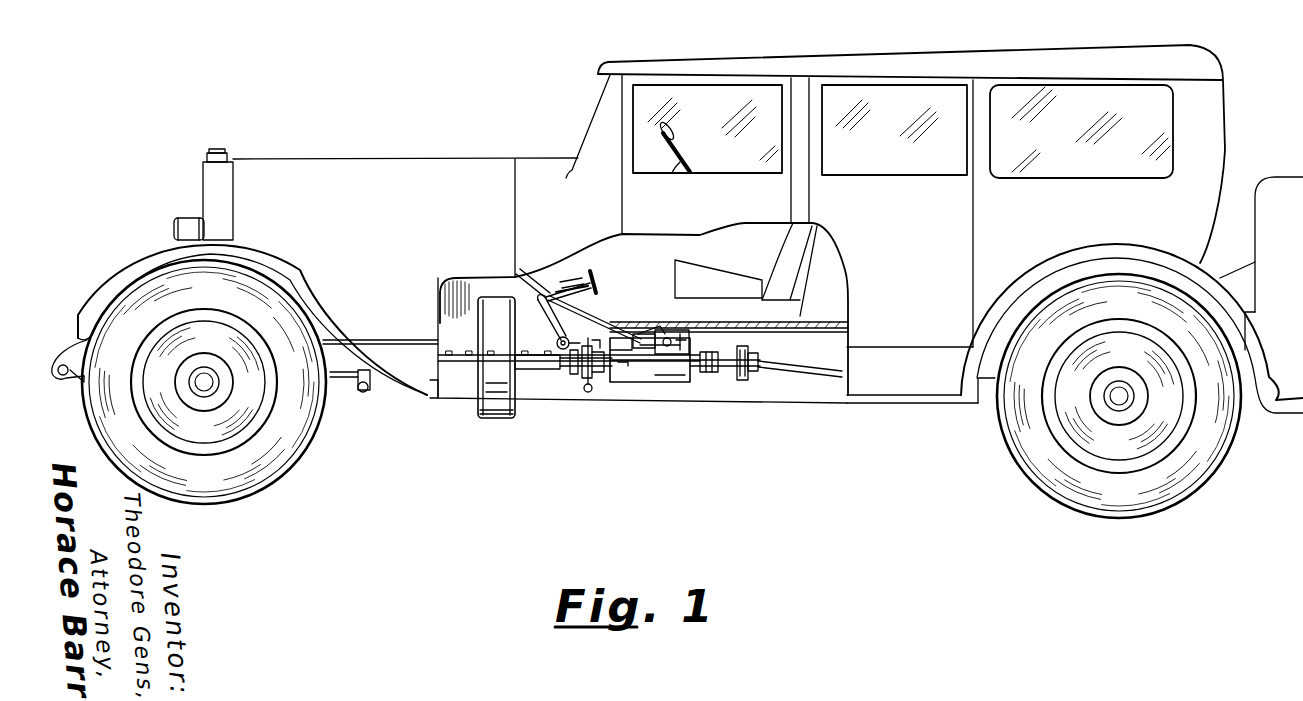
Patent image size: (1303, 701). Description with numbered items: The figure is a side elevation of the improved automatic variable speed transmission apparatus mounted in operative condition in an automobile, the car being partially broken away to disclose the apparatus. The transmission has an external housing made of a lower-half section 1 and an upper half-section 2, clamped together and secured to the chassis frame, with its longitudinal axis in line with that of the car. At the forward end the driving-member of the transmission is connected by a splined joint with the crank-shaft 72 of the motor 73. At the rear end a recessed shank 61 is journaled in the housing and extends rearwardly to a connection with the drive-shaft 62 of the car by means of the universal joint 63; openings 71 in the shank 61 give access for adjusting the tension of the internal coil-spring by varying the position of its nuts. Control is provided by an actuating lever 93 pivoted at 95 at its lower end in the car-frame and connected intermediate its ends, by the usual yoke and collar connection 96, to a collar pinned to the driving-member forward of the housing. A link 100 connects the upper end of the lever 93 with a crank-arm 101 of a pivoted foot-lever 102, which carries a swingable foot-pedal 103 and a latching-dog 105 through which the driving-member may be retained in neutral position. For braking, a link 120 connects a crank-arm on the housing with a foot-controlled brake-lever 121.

The lower-half section of the external housing 1 is at (636, 372).
The upper half-section of the housing 2 is at (636, 332).
The recessed shank 61 is at (706, 368).
The drive-shaft 62 is at (786, 360).
The universal joint 63 is at (750, 338).
The openings 71 is at (712, 350).
The crank-shaft 72 is at (540, 365).
The motor 73 is at (464, 312).
The actuating lever 93 is at (580, 374).
The pivot 95 is at (588, 392).
The yoke and collar connection 96 is at (598, 368).
The link 100 is at (590, 310).
The crank-arm 101 is at (557, 344).
The foot-lever 102 is at (551, 322).
The foot-pedal 103 is at (582, 287).
The latching-dog 105 is at (572, 294).
The link 120 is at (664, 338).
The brake-lever 121 is at (534, 291).